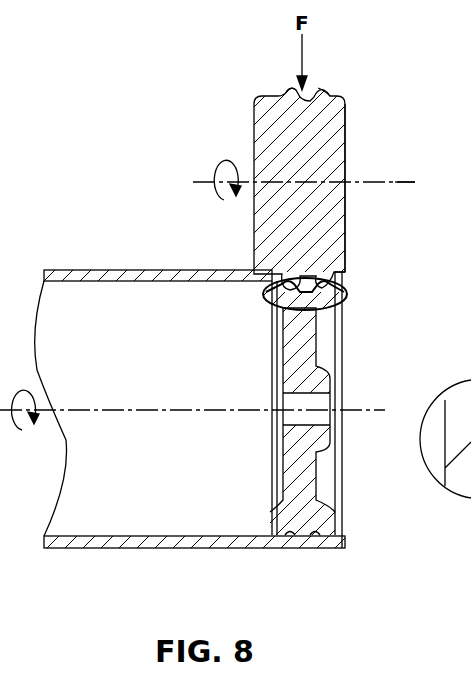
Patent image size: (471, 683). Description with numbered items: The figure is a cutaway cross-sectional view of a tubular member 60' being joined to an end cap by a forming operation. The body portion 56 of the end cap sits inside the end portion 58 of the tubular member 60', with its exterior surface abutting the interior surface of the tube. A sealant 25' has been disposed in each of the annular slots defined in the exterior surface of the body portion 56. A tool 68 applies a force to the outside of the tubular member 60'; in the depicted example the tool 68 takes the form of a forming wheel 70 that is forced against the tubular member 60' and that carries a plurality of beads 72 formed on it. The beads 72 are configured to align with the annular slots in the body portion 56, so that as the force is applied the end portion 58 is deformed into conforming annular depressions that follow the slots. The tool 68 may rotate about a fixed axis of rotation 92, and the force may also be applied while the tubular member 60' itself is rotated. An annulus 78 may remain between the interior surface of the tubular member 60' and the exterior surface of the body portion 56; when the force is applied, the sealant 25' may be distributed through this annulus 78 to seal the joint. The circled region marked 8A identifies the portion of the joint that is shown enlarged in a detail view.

The tubular member 60' is at (235, 341).
The end portion 58 is at (222, 548).
The tool 68 is at (246, 135).
The forming wheel 70 is at (355, 140).
The beads 72 is at (286, 88).
The annulus 78 is at (342, 272).
The axis of rotation 92 is at (410, 186).
The body portion 56 is at (326, 482).
The sealant 25' is at (315, 575).
The detail view 8A is at (347, 297).